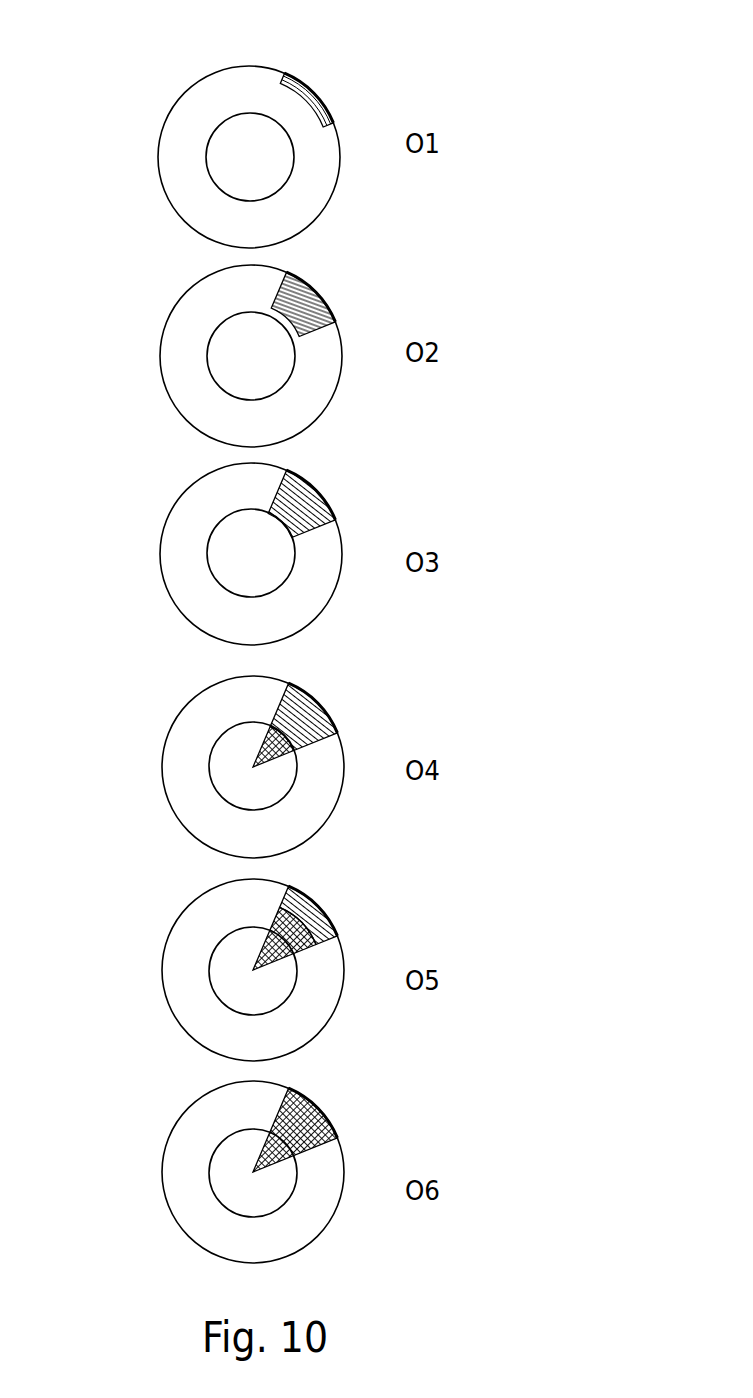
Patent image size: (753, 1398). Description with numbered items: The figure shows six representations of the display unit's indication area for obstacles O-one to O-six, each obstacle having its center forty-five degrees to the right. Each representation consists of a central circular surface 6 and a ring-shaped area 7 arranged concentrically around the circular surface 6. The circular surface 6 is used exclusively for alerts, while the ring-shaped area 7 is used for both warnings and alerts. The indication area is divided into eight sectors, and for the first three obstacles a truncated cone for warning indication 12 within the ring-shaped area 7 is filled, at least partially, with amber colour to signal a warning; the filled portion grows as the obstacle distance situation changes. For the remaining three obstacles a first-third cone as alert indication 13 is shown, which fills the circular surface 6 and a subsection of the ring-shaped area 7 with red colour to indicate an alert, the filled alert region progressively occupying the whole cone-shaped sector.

The circular surface 6 is at (193, 673).
The ring-shaped area 7 is at (213, 664).
The truncated cone for warning indication 12 is at (339, 270).
The first-third cone as alert indication 13 is at (334, 916).